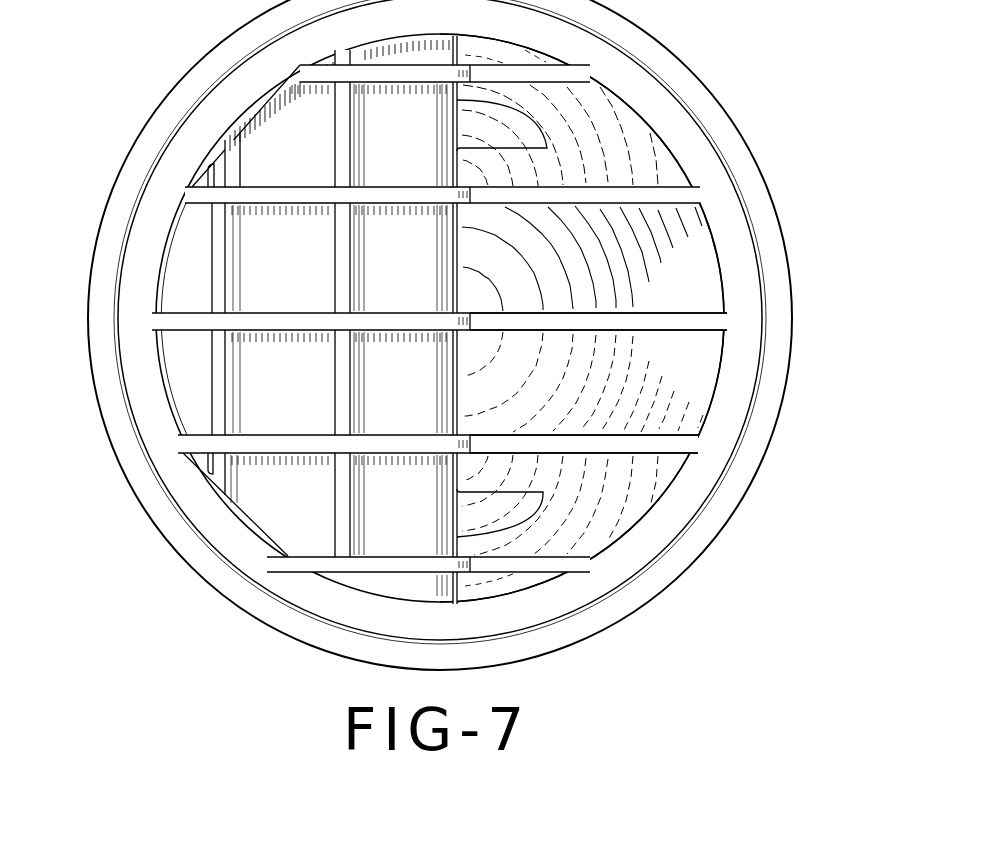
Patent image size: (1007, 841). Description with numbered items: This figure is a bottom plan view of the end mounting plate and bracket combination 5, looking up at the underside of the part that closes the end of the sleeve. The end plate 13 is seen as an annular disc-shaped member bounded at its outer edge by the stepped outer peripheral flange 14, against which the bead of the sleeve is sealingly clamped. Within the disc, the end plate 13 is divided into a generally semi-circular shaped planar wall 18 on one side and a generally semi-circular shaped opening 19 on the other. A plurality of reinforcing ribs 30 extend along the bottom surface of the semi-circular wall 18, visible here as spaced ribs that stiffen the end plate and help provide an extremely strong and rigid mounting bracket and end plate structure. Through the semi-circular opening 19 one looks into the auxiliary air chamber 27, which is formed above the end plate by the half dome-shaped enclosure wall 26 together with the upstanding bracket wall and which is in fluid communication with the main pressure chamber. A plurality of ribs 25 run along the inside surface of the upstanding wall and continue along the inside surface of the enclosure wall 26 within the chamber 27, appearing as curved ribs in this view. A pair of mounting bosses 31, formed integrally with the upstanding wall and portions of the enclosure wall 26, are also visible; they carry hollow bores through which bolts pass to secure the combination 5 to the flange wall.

The end mounting plate and bracket combination 5 is at (785, 96).
The end plate 13 is at (252, 95).
The stepped outer peripheral flange 14 is at (130, 176).
The semi-circular shaped planar wall 18 is at (186, 277).
The semi-circular shaped opening 19 is at (706, 392).
The ribs 25 is at (532, 327).
The half dome-shaped enclosure wall 26 is at (622, 492).
The auxiliary air chamber 27 is at (697, 286).
The reinforcing ribs 30 is at (306, 190).
The mounting bosses 31 is at (480, 505).